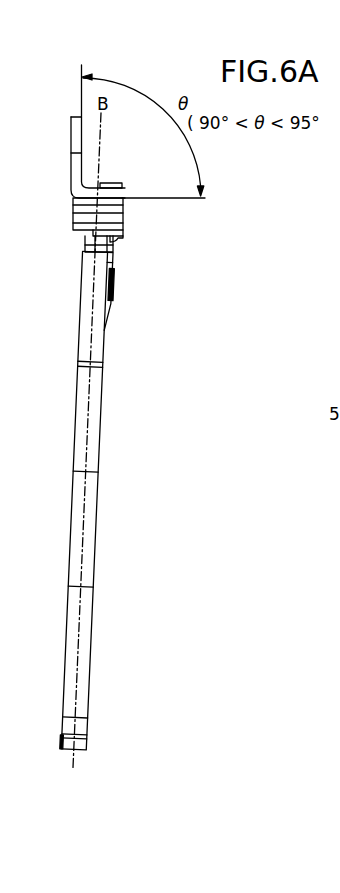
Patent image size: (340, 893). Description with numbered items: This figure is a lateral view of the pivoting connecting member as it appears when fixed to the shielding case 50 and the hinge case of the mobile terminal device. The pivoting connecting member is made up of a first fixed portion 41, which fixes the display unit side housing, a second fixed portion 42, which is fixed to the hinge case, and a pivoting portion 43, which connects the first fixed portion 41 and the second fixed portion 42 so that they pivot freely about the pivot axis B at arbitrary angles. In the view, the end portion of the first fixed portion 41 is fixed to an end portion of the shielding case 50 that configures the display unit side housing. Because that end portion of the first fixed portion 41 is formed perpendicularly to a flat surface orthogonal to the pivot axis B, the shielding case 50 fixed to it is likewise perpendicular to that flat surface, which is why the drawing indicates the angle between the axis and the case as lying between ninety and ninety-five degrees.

The first fixed portion 41 is at (117, 292).
The second fixed portion 42 is at (83, 158).
The pivoting portion 43 is at (123, 210).
The shielding case 50 is at (98, 423).